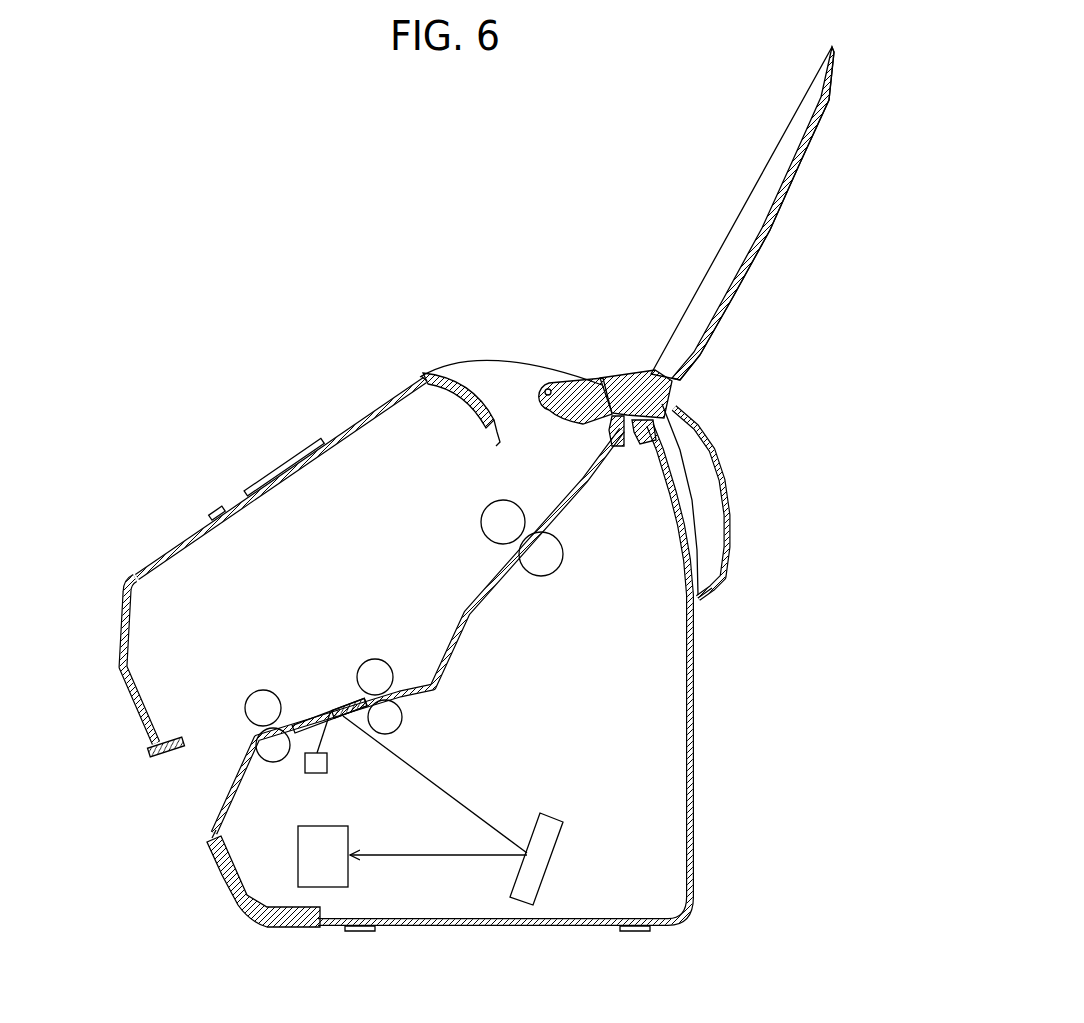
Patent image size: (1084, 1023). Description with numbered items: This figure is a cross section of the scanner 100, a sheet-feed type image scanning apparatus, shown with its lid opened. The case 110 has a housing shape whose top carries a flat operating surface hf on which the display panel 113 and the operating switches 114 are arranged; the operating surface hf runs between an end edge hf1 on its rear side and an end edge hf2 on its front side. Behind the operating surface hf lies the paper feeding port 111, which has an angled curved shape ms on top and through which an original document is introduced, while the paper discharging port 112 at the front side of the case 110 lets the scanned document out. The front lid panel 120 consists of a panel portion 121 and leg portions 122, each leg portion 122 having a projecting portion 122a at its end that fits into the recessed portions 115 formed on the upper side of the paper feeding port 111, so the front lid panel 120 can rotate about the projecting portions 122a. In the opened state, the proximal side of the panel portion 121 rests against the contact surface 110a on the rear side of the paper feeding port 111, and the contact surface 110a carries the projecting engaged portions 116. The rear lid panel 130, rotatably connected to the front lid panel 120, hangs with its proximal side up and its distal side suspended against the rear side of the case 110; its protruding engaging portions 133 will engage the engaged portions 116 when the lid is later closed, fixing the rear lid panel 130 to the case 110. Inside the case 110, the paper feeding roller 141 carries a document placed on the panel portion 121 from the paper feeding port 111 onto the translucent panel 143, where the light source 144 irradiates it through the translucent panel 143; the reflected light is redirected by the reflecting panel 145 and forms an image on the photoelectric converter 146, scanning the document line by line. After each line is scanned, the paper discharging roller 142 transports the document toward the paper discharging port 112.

The scanner 100 is at (325, 223).
The case 110 is at (723, 736).
The contact surface 110a is at (612, 441).
The paper feeding port 111 is at (498, 442).
The paper discharging port 112 is at (210, 832).
The display panel 113 is at (298, 474).
The operating switches 114 is at (228, 519).
The recessed portions 115 is at (553, 376).
The engaged portions 116 is at (655, 445).
The front lid panel 120 is at (664, 235).
The panel portion 121 is at (748, 240).
The leg portions 122 is at (621, 378).
The projecting portion 122a is at (553, 343).
The rear lid panel 130 is at (738, 528).
The engaging portions 133 is at (698, 600).
The paper feeding roller 141 is at (563, 558).
The paper discharging roller 142 is at (263, 706).
The translucent panel 143 is at (345, 710).
The light source 144 is at (303, 773).
The reflecting panel 145 is at (535, 872).
The photoelectric converter 146 is at (345, 874).
The operating surface hf is at (345, 428).
The end edge on the rear side of the operating surface hf1 is at (425, 374).
The end edge on the front side of the operating surface hf2 is at (133, 572).
The angled curved shape ms is at (488, 357).